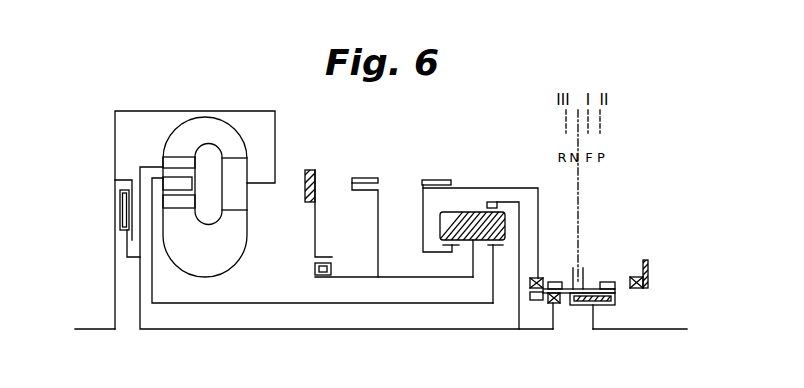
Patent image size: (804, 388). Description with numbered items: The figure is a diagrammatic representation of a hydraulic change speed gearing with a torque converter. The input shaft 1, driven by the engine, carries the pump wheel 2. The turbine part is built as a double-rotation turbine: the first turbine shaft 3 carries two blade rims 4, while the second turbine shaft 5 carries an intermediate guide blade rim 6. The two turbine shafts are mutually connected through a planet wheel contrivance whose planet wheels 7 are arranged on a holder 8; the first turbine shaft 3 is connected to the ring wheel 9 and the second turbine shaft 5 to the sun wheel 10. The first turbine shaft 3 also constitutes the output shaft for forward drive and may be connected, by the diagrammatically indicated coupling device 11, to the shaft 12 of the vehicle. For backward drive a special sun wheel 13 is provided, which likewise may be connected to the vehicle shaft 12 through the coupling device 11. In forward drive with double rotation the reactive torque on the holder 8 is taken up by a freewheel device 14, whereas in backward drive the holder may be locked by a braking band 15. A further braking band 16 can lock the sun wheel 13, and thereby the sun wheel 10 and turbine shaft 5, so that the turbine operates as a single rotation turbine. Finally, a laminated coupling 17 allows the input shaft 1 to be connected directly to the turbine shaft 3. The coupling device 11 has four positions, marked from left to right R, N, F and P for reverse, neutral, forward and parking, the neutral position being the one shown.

The input shaft 1 is at (88, 331).
The pump wheel 2 is at (240, 200).
The first turbine shaft 3 is at (230, 330).
The blade rims 4 is at (165, 160).
The second turbine shaft 5 is at (260, 303).
The intermediate guide blade rim 6 is at (177, 184).
The planet wheels 7 is at (457, 220).
The holder 8 is at (392, 276).
The ring wheel 9 is at (492, 202).
The sun wheel 10 is at (496, 247).
The coupling device 11 is at (558, 306).
The vehicle shaft 12 is at (653, 330).
The special sun wheel 13 is at (453, 250).
The freewheel device 14 is at (315, 267).
The braking band 15 is at (365, 176).
The braking band 16 is at (436, 178).
The laminated coupling 17 is at (120, 209).